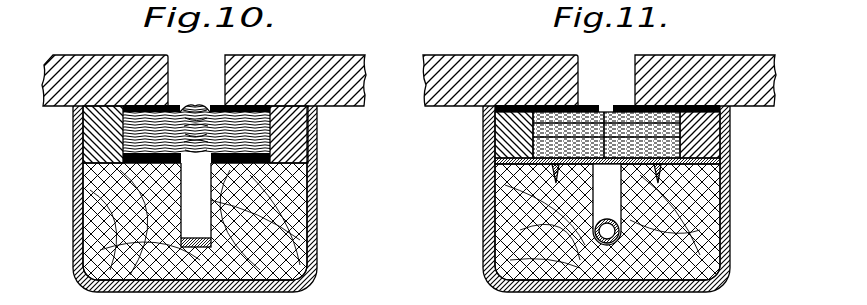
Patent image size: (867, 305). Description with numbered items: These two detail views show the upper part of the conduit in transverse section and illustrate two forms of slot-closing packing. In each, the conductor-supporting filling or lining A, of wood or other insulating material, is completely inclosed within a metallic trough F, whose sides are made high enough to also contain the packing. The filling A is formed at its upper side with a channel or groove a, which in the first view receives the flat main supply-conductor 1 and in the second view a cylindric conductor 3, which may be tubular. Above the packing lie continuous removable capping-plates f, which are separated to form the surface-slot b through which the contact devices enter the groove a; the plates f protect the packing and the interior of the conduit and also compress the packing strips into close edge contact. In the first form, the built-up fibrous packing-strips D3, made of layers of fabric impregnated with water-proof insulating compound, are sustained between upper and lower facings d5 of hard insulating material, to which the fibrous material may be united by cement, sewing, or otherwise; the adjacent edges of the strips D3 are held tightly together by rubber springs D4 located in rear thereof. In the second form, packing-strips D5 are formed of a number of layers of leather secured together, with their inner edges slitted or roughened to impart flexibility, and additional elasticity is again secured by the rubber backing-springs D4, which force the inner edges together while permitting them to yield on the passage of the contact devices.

In FIG. 10, the capping-plate f is at (132, 62).
In FIG. 11, the capping-plate f is at (518, 63).
In FIG. 10, the facing of hard insulating material d5 is at (212, 102).
In FIG. 11, the packing-strip D5 is at (612, 102).
In FIG. 10, the rubber backing-spring D4 is at (340, 127).
In FIG. 11, the rubber backing-spring D4 is at (739, 131).
In FIG. 10, the built-up fibrous packing-strip D3 is at (196, 200).
In FIG. 10, the channel or groove a is at (196, 195).
In FIG. 11, the channel or groove a is at (607, 204).
In FIG. 10, the main supply-conductor 1 is at (196, 233).
In FIG. 11, the cylindric conductor 3 is at (607, 221).
In FIG. 11, the surface-slot b is at (606, 78).
In FIG. 10, the insulating filling or lining A is at (107, 228).
In FIG. 11, the insulating filling or lining A is at (507, 228).
In FIG. 10, the metallic trough F is at (317, 208).
In FIG. 11, the metallic trough F is at (727, 240).